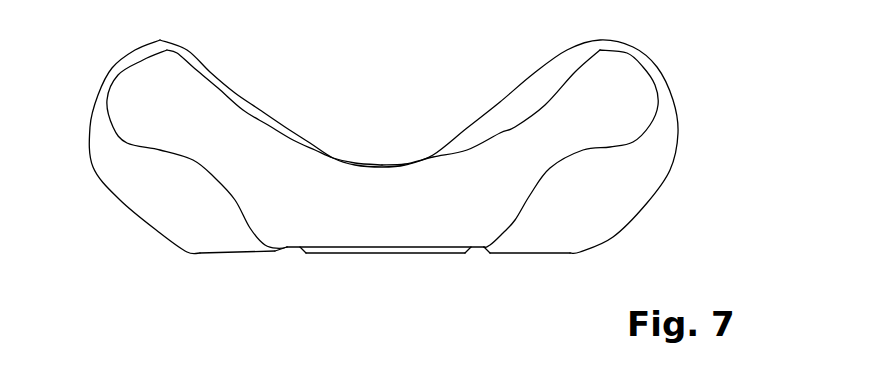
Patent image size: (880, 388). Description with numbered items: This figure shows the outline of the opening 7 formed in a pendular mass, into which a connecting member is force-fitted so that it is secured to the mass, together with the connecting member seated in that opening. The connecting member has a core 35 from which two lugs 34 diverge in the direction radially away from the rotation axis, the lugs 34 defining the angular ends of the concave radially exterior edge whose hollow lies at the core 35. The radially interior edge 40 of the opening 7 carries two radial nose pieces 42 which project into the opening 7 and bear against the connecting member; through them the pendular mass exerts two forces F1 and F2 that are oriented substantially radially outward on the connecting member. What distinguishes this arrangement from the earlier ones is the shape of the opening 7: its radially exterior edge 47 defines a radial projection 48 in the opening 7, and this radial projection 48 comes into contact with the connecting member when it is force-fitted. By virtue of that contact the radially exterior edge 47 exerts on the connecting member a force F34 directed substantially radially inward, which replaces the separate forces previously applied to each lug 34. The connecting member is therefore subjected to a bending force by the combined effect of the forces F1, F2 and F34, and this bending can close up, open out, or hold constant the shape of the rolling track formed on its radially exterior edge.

The opening 7 is at (617, 193).
The lug 34 is at (138, 98).
The core 35 is at (385, 224).
The radially interior edge 40 is at (538, 253).
The radial nose piece 42 is at (282, 255).
The radially exterior edge 47 is at (280, 113).
The radial projection 48 is at (410, 143).
The force F1 is at (290, 268).
The force F2 is at (477, 270).
The force F34 is at (382, 148).